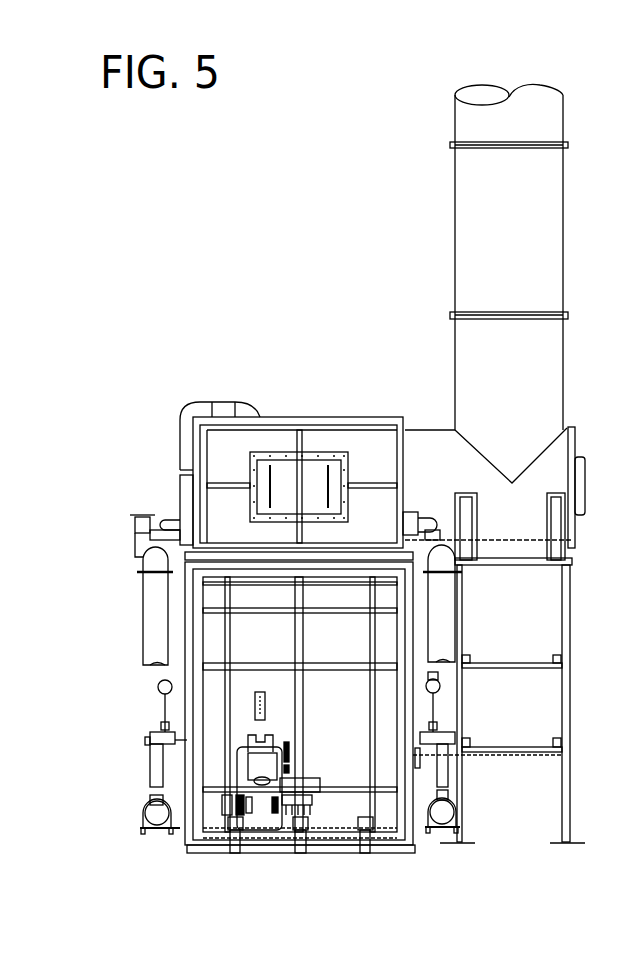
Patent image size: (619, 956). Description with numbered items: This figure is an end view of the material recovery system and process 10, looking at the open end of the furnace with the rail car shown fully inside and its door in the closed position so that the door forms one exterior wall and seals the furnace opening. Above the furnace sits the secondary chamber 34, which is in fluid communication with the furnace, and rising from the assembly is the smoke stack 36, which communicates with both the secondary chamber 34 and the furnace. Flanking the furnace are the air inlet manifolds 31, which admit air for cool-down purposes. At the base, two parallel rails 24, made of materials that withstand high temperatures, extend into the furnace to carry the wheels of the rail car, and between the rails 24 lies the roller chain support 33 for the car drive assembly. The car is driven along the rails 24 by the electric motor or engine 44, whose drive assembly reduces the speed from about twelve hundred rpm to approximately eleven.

The material recovery system and process 10 is at (240, 272).
The smoke stack 36 is at (480, 250).
The secondary chamber 34 is at (300, 417).
The electric motor or engine 44 is at (282, 736).
The rails 24 is at (240, 842).
The roller chain support 33 is at (305, 845).
The air inlet manifolds 31 is at (155, 738).